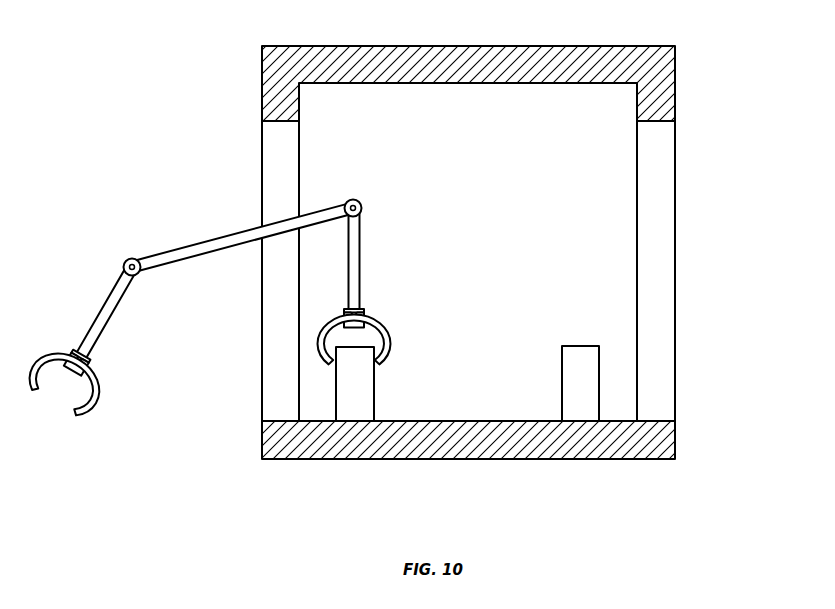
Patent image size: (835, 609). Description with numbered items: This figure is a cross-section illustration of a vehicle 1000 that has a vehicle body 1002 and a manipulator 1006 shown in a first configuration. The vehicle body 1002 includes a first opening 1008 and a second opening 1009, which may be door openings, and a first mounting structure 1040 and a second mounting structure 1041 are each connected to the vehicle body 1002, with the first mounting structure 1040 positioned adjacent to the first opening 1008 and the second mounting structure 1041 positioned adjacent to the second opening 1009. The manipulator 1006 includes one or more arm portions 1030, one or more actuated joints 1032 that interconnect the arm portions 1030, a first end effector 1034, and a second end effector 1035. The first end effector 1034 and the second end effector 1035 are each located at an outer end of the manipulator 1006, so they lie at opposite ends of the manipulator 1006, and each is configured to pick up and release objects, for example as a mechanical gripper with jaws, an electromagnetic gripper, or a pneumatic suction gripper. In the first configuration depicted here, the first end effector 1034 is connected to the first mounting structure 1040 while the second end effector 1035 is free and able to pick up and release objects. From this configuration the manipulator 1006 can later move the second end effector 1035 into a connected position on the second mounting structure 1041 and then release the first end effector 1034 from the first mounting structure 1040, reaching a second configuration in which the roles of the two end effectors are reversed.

The vehicle 1000 is at (202, 58).
The vehicle body 1002 is at (677, 83).
The manipulator 1006 is at (381, 187).
The first opening 1008 is at (262, 149).
The second opening 1009 is at (676, 148).
The arm portions 1030 is at (190, 246).
The actuated joints 1032 is at (132, 258).
The first end effector 1034 is at (362, 208).
The second end effector 1035 is at (102, 388).
The first mounting structure 1040 is at (376, 374).
The second mounting structure 1041 is at (562, 390).